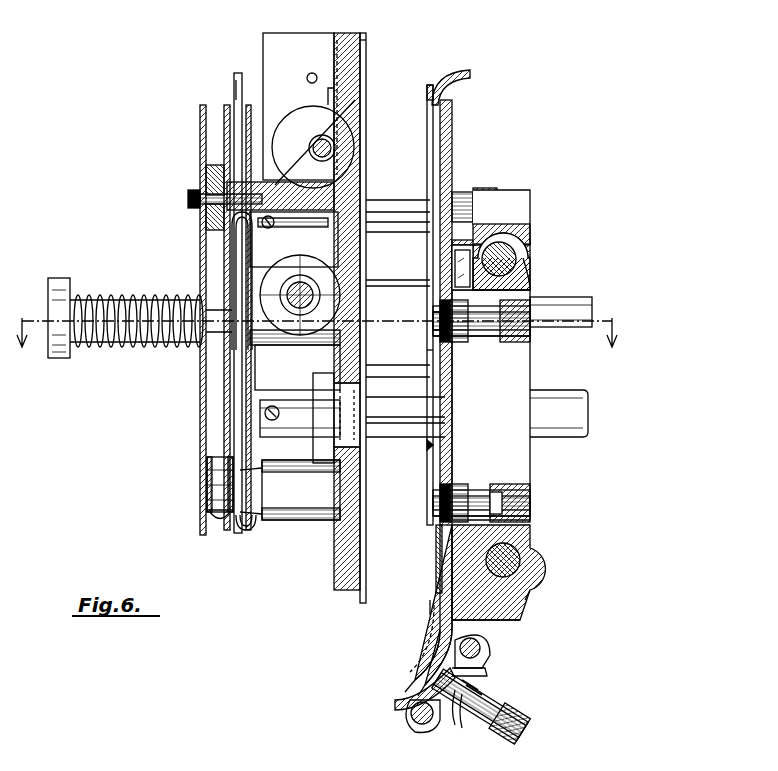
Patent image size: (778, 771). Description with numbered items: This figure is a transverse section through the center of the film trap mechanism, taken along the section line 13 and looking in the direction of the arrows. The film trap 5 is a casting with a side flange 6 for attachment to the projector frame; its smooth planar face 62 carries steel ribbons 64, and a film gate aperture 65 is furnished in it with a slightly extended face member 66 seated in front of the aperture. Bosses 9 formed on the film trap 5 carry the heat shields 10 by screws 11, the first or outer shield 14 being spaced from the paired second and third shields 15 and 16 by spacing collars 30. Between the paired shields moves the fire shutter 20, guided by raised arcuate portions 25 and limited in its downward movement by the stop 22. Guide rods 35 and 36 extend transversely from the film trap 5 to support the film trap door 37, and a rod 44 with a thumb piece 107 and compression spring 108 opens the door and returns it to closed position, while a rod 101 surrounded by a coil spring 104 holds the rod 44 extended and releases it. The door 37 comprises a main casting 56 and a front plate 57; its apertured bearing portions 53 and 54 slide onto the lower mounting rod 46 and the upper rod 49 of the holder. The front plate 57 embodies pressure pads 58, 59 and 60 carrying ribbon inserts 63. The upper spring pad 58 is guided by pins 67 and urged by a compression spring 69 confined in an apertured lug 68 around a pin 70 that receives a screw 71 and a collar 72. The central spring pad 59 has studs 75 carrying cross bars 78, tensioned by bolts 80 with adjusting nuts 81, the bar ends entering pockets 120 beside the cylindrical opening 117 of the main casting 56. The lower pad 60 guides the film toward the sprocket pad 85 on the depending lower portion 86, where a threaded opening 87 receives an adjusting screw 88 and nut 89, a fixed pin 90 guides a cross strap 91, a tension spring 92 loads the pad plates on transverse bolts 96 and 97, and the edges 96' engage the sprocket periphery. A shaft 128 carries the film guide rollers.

The film trap 5 is at (352, 27).
The side flange 6 is at (283, 40).
The bosses 9 is at (292, 192).
The heat shields 10 is at (200, 108).
The screws 11 is at (188, 198).
The section line 13 is at (317, 316).
The first or outer shield 14 is at (224, 134).
The second shield 15 is at (234, 148).
The third shield 16 is at (210, 166).
The fire shutter 20 is at (260, 408).
The stop 22 is at (256, 532).
The raised arcuate portions 25 is at (232, 262).
The spacing collars 30 is at (206, 220).
The guide rod 35 is at (392, 212).
The guide rod 36 is at (430, 447).
The film trap door 37 is at (452, 95).
The rod 44 is at (170, 345).
The lower transverse mounting rod 46 is at (528, 556).
The upper rod 49 is at (528, 276).
The apertured bearing portion 53 is at (524, 250).
The apertured bearing portion 54 is at (524, 578).
The main casting 56 is at (515, 614).
The front plate 57 is at (452, 150).
The upper spring pad 58 is at (427, 92).
The central spring pad 59 is at (433, 352).
The lower pad 60 is at (436, 568).
The planar face 62 is at (366, 48).
The ribbon inserts 63 is at (427, 165).
The ribbons 64 is at (366, 66).
The film gate aperture 65 is at (360, 440).
The face member 66 is at (366, 372).
The pins 67 is at (430, 284).
The apertured lug 68 is at (485, 190).
The compression spring 69 is at (465, 192).
The pin 70 is at (500, 196).
The screw 71 is at (528, 212).
The collar 72 is at (520, 204).
The studs 75 is at (433, 322).
The cross bars 78 is at (450, 340).
The bolts 80 is at (538, 336).
The adjusting nuts 81 is at (510, 300).
The sprocket pad 85 is at (437, 648).
The depending lower portion 86 is at (395, 703).
The threaded opening 87 is at (430, 676).
The adjusting screw 88 is at (500, 703).
The nut 89 is at (532, 722).
The fixed pin 90 is at (487, 672).
The cross strap 91 is at (456, 725).
The tension spring 92 is at (480, 690).
The upper transverse bolt 96 is at (491, 651).
The edges 96' is at (415, 638).
The lower transverse bolt 97 is at (420, 728).
The rod 101 is at (320, 290).
The coil spring 104 is at (340, 295).
The thumb piece 107 is at (58, 360).
The compression spring 108 is at (126, 350).
The cylindrical opening 117 is at (530, 460).
The pockets 120 is at (470, 340).
The shaft 128 is at (322, 136).